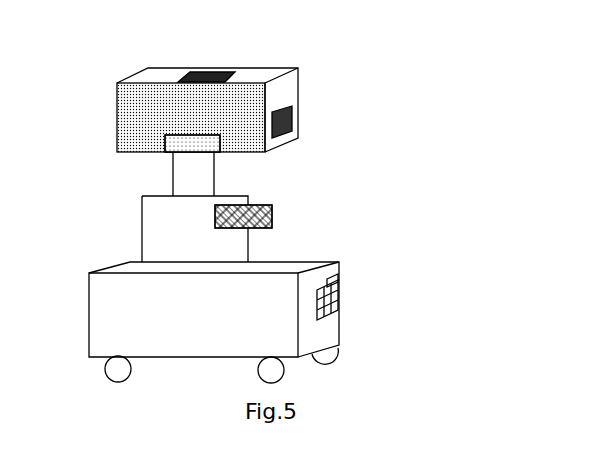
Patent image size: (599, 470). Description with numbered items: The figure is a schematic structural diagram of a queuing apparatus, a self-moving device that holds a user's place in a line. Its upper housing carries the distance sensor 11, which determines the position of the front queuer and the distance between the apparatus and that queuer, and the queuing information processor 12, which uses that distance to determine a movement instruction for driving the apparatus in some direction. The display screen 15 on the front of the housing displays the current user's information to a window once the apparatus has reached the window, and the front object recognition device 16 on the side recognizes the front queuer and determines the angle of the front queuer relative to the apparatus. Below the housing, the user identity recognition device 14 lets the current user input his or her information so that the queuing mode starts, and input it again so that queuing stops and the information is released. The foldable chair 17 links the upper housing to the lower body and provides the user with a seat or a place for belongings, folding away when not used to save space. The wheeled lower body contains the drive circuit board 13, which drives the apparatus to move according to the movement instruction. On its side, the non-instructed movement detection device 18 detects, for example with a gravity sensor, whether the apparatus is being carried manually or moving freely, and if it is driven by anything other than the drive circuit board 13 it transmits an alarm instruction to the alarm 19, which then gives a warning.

The distance sensor 11 is at (267, 111).
The queuing information processor 12 is at (235, 79).
The drive circuit board 13 is at (273, 322).
The user identity recognition device 14 is at (272, 217).
The display screen 15 is at (253, 103).
The front object recognition device 16 is at (292, 123).
The foldable chair 17 is at (232, 248).
The non-instructed movement detection device 18 is at (338, 295).
The alarm 19 is at (329, 274).